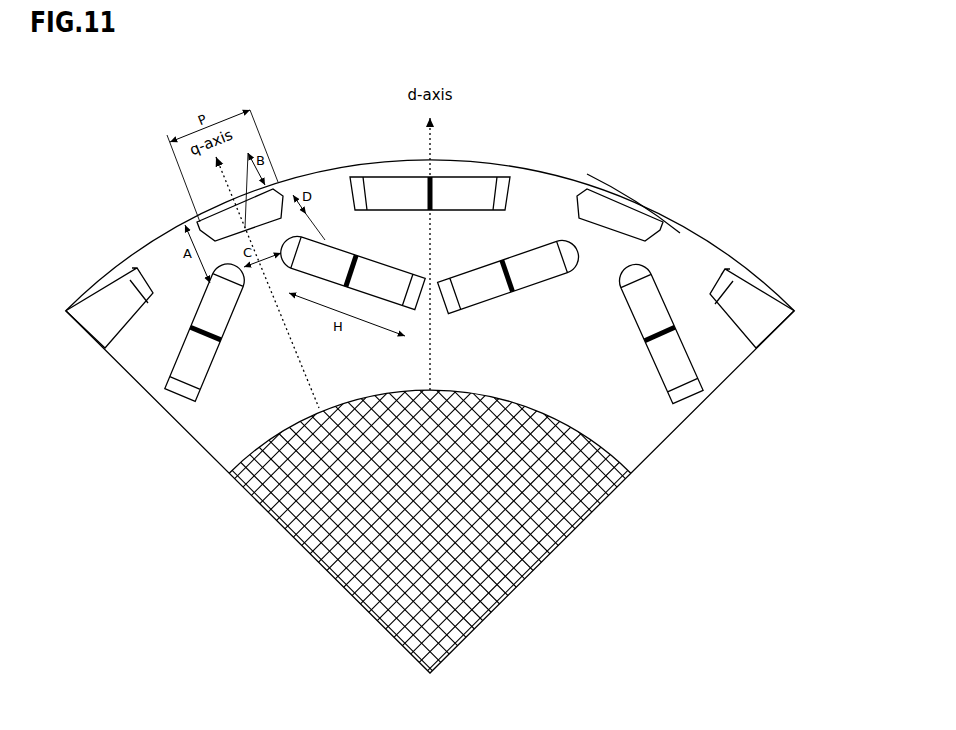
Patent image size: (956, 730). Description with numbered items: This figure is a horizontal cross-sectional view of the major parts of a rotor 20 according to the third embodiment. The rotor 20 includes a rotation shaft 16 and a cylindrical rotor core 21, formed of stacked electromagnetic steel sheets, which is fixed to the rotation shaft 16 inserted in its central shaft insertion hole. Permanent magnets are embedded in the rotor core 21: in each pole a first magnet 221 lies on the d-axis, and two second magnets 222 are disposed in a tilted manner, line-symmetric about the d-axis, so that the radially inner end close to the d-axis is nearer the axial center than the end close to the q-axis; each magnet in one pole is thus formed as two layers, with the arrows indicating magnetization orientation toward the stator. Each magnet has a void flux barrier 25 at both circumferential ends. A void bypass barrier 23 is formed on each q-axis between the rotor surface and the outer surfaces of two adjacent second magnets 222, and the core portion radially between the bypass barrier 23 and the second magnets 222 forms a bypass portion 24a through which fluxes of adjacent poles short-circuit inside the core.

The rotor 20 is at (102, 165).
The rotation shaft 16 is at (578, 561).
The first magnet 221 is at (466, 178).
The second magnet 222 is at (296, 238).
The bypass barrier 23 is at (618, 198).
The bypass portion 24a is at (632, 248).
The flux barrier 25 is at (653, 277).
The rotor core 21 is at (758, 278).